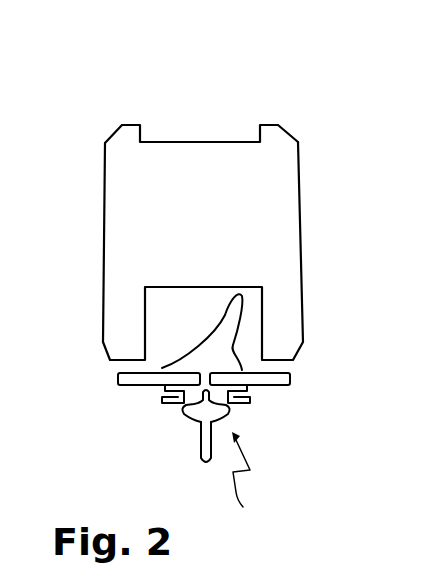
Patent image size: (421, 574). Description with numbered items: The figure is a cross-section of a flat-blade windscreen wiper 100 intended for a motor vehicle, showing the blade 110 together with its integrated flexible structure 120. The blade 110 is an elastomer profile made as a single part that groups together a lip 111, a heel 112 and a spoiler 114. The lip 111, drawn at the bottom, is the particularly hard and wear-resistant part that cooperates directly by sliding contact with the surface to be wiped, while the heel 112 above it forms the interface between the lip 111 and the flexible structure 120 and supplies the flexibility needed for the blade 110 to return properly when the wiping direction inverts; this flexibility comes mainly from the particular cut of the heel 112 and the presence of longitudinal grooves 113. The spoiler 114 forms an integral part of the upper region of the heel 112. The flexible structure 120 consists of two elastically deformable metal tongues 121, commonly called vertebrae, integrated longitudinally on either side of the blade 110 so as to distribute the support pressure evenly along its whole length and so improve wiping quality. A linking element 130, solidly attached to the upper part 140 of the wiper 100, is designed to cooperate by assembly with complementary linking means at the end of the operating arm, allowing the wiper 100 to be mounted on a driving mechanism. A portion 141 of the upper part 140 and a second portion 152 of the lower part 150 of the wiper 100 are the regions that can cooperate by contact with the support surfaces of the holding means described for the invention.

The windscreen wiper 100 is at (337, 110).
The blade 110 is at (251, 406).
The lip 111 is at (205, 453).
The heel 112 is at (202, 390).
The longitudinal grooves 113 is at (162, 393).
The spoiler 114 is at (238, 312).
The flexible structure 120 is at (296, 375).
The tongue 121 is at (118, 379).
The linking element 130 is at (298, 170).
The upper part 140 is at (158, 124).
The portion of the upper part 141 is at (265, 123).
The lower part 150 is at (245, 483).
The second portion of the lower part 152 is at (277, 386).